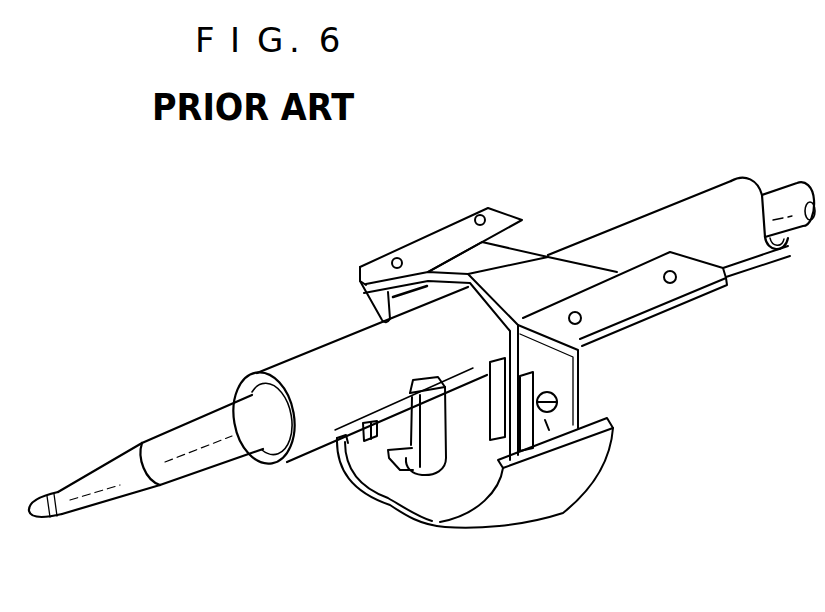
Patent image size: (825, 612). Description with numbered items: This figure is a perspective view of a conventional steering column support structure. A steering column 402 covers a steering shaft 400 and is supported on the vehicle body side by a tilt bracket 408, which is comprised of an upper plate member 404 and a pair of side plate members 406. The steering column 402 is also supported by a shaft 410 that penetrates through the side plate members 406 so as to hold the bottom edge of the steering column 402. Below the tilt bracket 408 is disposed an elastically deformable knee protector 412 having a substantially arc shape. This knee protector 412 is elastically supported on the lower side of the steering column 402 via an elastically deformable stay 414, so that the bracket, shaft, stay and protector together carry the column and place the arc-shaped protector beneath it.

The steering shaft 400 is at (787, 198).
The steering column 402 is at (758, 270).
The upper plate member 404 is at (546, 280).
The side plate members 406 is at (383, 309).
The tilt bracket 408 is at (478, 198).
The shaft 410 is at (466, 395).
The knee protector 412 is at (538, 497).
The stay 414 is at (397, 480).